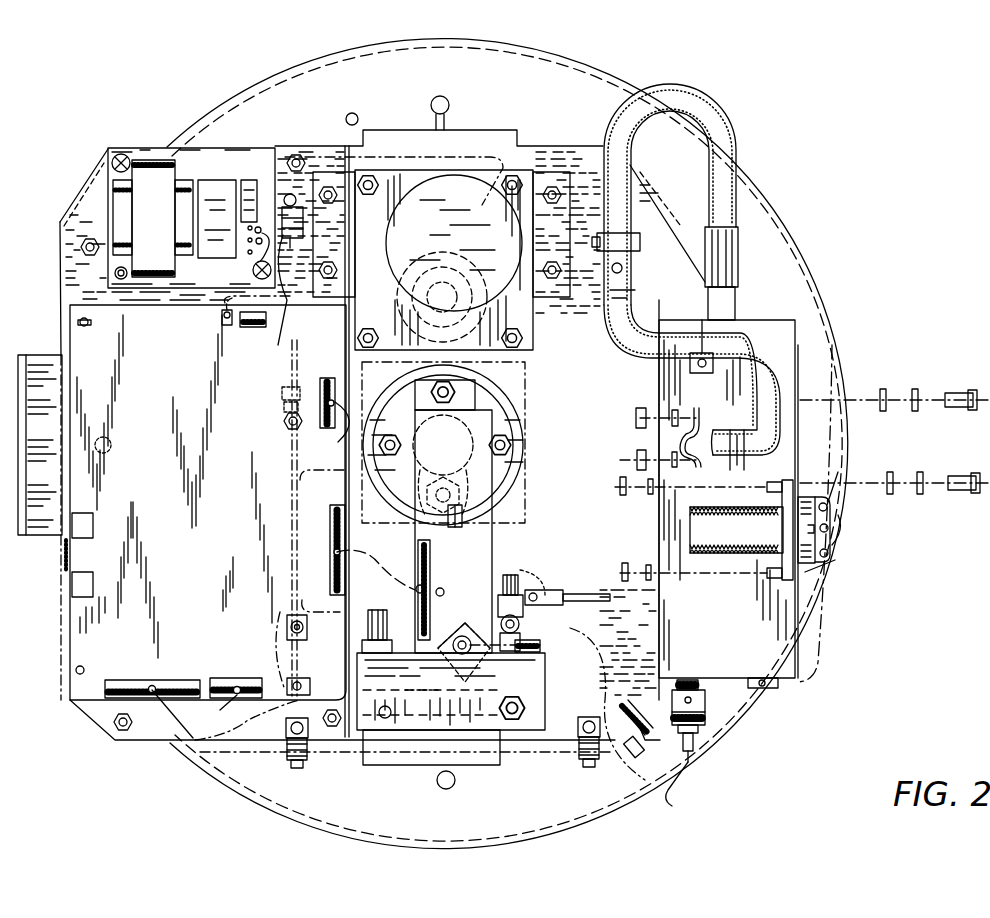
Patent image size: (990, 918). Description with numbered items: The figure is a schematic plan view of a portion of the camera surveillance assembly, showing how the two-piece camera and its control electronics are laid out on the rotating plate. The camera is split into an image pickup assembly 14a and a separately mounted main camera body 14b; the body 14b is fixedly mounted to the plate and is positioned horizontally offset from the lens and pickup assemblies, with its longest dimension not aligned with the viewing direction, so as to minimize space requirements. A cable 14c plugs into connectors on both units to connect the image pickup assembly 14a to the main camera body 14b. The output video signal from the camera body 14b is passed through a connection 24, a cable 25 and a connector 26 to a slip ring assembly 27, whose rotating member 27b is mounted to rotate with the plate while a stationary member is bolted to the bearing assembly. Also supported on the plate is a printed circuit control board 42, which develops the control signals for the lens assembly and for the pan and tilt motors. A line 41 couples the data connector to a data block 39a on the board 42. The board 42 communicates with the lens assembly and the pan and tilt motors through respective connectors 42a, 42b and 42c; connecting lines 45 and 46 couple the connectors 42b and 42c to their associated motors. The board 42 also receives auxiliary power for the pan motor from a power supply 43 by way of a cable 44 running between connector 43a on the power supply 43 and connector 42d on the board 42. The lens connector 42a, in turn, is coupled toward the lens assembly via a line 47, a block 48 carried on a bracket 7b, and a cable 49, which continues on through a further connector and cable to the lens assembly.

The image pickup assembly 14a is at (532, 373).
The main camera body 14b is at (787, 333).
The cable 14c is at (720, 109).
The connection 24 is at (705, 713).
The cable 25 is at (636, 729).
The connector 26 is at (470, 650).
The slip ring assembly 27 is at (508, 563).
The rotating member 27b is at (493, 540).
The data block 39a is at (426, 547).
The line 41 is at (395, 572).
The printed circuit control board 42 is at (93, 633).
The connector 42a is at (112, 680).
The connector 42b is at (282, 396).
The connector 42c is at (212, 677).
The connector 42d is at (290, 680).
The power supply 43 is at (240, 158).
The connector 43a is at (258, 242).
The cable 44 is at (278, 345).
The connecting line 45 is at (342, 443).
The connecting line 46 is at (222, 710).
The line 47 is at (535, 752).
The block 48 is at (830, 520).
The cable 49 is at (690, 525).
The bracket 7b is at (800, 588).